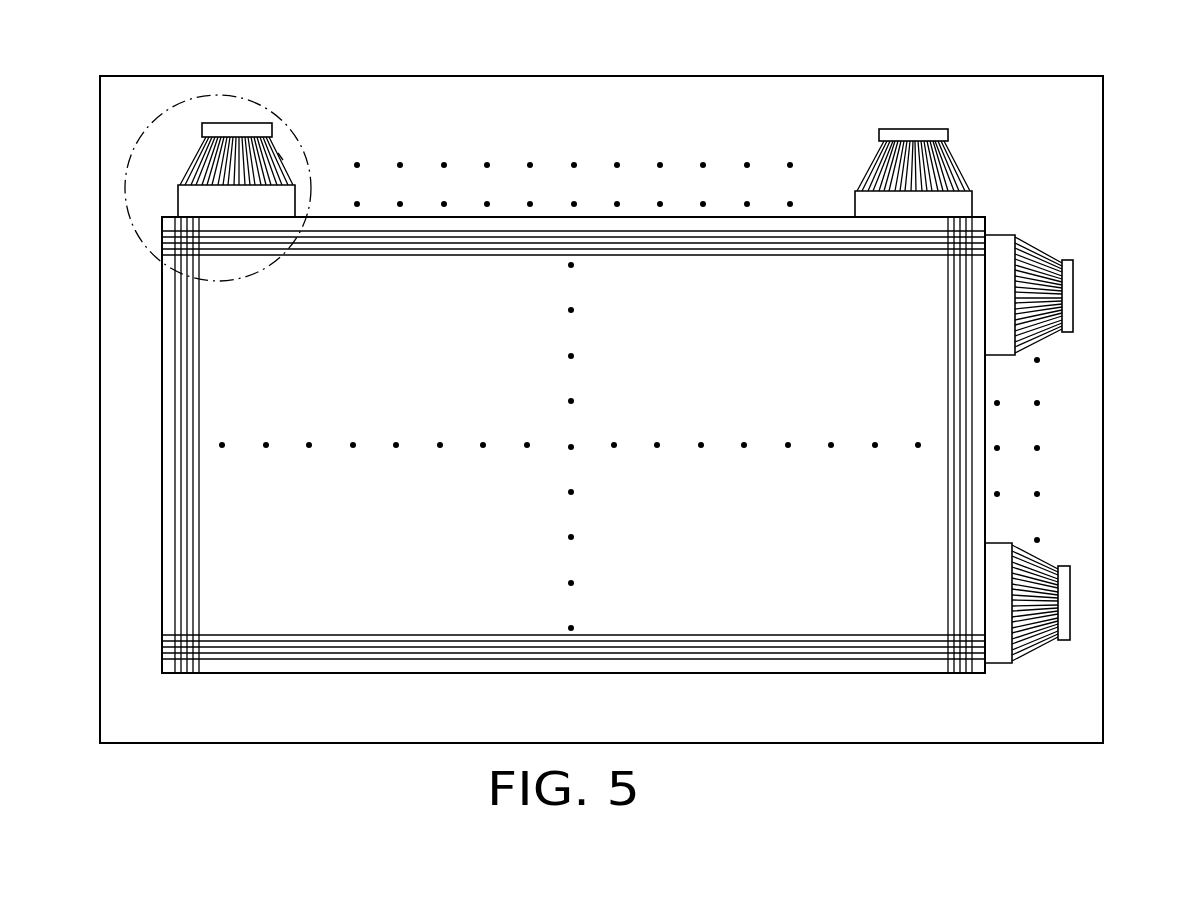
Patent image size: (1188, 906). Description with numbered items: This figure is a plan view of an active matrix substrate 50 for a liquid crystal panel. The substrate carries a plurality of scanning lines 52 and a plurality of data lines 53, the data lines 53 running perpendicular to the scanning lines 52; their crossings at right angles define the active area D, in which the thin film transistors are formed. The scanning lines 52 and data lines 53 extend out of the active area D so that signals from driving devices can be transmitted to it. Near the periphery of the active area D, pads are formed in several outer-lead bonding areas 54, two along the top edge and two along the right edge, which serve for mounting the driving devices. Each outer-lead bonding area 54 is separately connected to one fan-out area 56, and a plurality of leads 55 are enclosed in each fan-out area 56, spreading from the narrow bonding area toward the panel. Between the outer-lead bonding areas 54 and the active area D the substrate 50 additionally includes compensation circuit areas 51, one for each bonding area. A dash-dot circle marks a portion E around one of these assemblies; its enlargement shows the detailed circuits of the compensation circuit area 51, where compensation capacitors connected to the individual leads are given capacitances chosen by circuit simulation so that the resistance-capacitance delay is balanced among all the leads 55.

The active matrix substrate 50 is at (531, 68).
The compensation circuit area 51 is at (195, 200).
The scanning lines 52 is at (632, 203).
The data lines 53 is at (985, 464).
The outer-lead bonding area 54 is at (233, 130).
The leads 55 is at (278, 153).
The fan-out area 56 is at (178, 136).
The active area D is at (701, 362).
The portion E is at (228, 188).